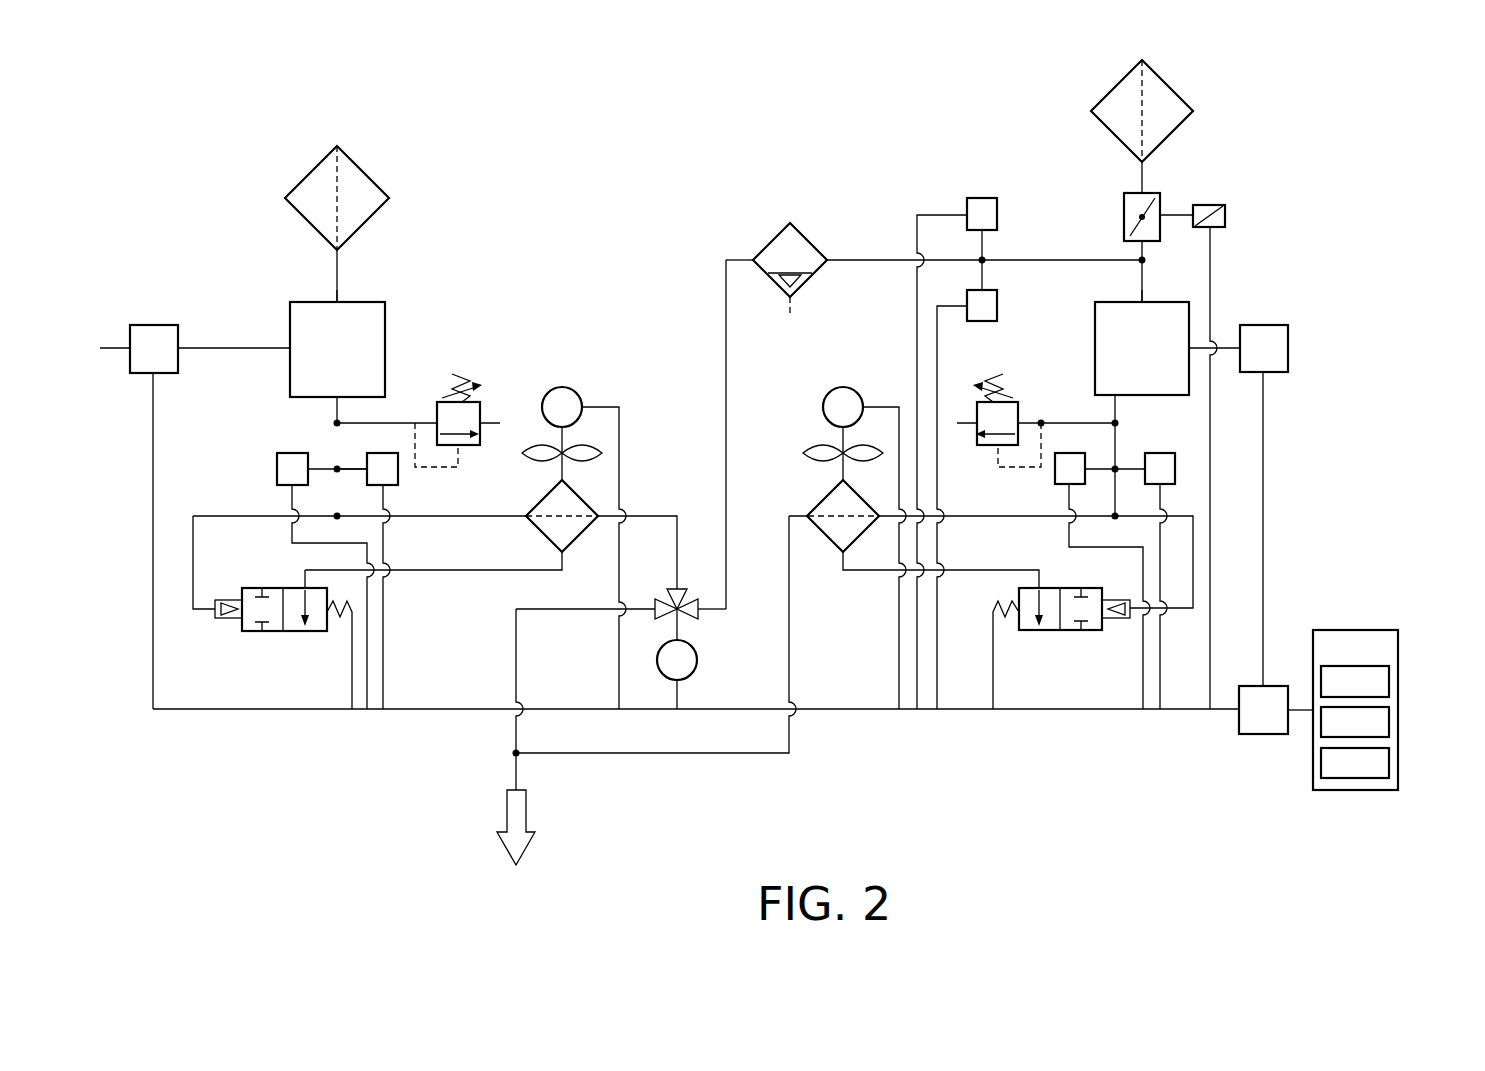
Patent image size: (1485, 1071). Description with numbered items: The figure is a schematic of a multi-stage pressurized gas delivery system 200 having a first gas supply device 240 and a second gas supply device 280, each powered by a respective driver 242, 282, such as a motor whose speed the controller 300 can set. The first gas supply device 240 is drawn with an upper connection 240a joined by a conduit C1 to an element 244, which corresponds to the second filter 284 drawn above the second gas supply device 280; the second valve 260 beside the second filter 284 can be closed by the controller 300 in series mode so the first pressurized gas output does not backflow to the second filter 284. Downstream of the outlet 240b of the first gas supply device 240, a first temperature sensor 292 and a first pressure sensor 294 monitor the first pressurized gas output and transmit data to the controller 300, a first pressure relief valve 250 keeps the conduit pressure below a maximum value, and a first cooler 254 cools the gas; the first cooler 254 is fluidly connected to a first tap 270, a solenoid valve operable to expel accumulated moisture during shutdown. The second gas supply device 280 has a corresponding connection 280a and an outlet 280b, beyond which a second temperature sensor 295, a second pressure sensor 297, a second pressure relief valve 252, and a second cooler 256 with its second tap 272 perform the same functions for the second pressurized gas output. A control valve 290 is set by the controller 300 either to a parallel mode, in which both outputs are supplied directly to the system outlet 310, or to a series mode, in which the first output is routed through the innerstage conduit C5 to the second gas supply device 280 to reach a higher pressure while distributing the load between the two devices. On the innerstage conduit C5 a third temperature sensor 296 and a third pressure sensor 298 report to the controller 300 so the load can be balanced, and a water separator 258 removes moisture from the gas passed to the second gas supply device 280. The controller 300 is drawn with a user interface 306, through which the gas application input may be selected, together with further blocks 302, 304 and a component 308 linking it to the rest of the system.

The multi-stage pressurized gas delivery system 200 is at (193, 142).
The first gas supply device 240 is at (386, 349).
The first tank inlet 240a is at (334, 300).
The outlet of the first gas supply device 240b is at (335, 403).
The driver 242 is at (157, 325).
The first pressure relief vent 244 is at (307, 181).
The first pressure relief valve 250 is at (480, 405).
The second pressure relief valve 252 is at (1018, 406).
The first cooler 254 is at (540, 540).
The second cooler 256 is at (815, 505).
The water separator 258 is at (766, 245).
The second valve 260 is at (1226, 215).
The first tap 270 is at (258, 632).
The second tap 272 is at (1070, 632).
The second gas supply device 280 is at (1095, 349).
The second tank inlet 280a is at (1117, 301).
The outlet of the second gas supply device 280b is at (1117, 400).
The driver 282 is at (1288, 355).
The second filter 284 is at (1175, 128).
The control valve 290 is at (698, 617).
The first temperature sensor 292 is at (277, 469).
The first pressure sensor 294 is at (398, 480).
The second temperature sensor 295 is at (1055, 476).
The third temperature sensor 296 is at (997, 306).
The second pressure sensor 297 is at (1175, 469).
The third pressure sensor 298 is at (997, 215).
The controller 300 is at (1355, 630).
The processor 302 is at (1389, 681).
The memory 304 is at (1389, 722).
The user interface 306 is at (1389, 765).
The interface 308 is at (1263, 734).
The system outlet 310 is at (526, 810).
The first conduit C1 is at (340, 268).
The innerstage conduit C5 is at (726, 366).